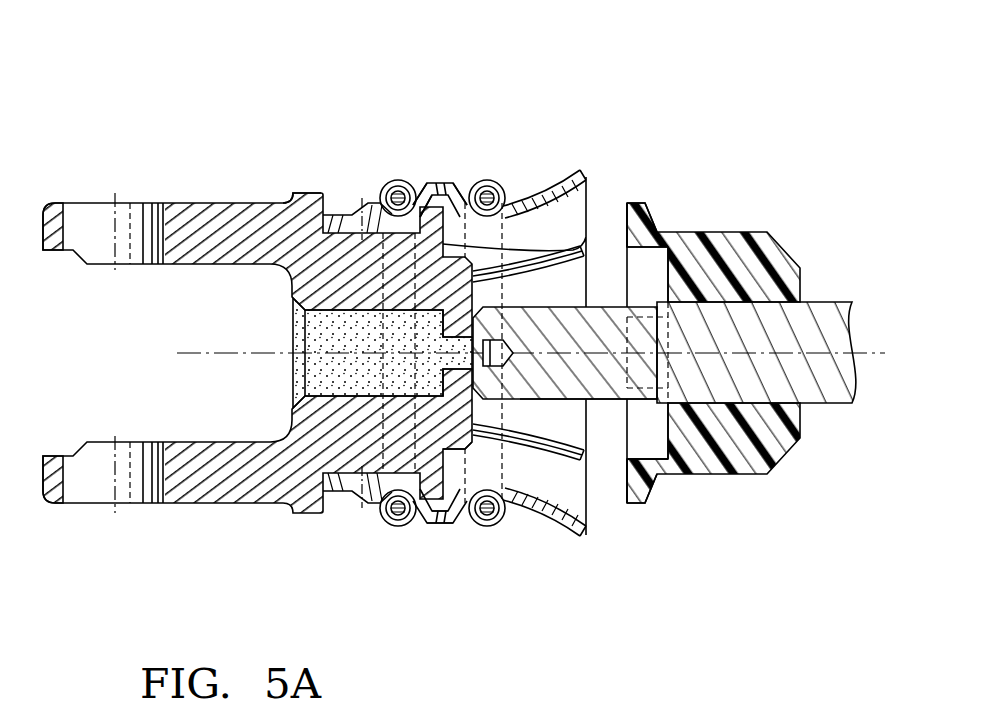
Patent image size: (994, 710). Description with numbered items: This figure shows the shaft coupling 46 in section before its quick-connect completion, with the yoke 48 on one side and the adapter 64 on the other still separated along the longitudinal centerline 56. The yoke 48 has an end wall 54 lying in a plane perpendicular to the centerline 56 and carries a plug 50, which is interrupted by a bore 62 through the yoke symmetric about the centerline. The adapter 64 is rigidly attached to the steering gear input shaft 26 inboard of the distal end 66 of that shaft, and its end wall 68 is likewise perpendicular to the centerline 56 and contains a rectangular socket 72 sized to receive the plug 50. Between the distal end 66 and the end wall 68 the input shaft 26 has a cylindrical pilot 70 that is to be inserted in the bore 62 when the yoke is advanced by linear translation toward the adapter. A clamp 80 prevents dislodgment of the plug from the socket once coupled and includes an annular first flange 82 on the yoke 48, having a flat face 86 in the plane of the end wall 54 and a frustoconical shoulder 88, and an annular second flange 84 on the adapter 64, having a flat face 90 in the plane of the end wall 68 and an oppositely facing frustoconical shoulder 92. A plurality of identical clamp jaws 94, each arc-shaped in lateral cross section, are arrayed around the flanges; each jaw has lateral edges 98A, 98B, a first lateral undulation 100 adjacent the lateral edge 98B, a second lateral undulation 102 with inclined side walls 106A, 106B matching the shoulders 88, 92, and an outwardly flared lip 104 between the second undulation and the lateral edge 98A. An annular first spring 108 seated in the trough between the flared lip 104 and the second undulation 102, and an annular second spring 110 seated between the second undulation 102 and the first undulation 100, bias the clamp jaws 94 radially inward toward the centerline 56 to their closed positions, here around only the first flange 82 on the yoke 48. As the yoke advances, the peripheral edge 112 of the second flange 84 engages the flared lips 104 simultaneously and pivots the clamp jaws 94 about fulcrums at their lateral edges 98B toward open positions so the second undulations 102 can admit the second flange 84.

The steering gear input shaft 26 is at (820, 300).
The shaft coupling 46 is at (433, 281).
The yoke 48 is at (190, 200).
The plug 50 is at (470, 444).
The end wall 54 is at (546, 210).
The longitudinal centerline 56 is at (207, 353).
The bore 62 is at (352, 322).
The adapter 64 is at (720, 230).
The distal end 66 is at (487, 381).
The end wall 68 is at (634, 276).
The cylindrical pilot 70 is at (573, 400).
The rectangular socket 72 is at (637, 265).
The clamp 80 is at (433, 158).
The annular first flange 82 is at (412, 206).
The annular second flange 84 is at (647, 200).
The flat face 86 is at (455, 212).
The frustoconical shoulder 88 is at (409, 527).
The flat face 90 is at (623, 487).
The frustoconical shoulder 92 is at (655, 487).
The clamp jaw 94 is at (586, 268).
The lateral edge 98A is at (584, 200).
The lateral edge 98B is at (313, 203).
The first lateral undulation 100 is at (363, 210).
The second lateral undulation 102 is at (418, 206).
The outwardly flared lip 104 is at (537, 197).
The side wall 106A is at (430, 528).
The side wall 106B is at (462, 528).
The annular first spring 108 is at (492, 525).
The annular second spring 110 is at (387, 520).
The peripheral edge 112 is at (628, 200).